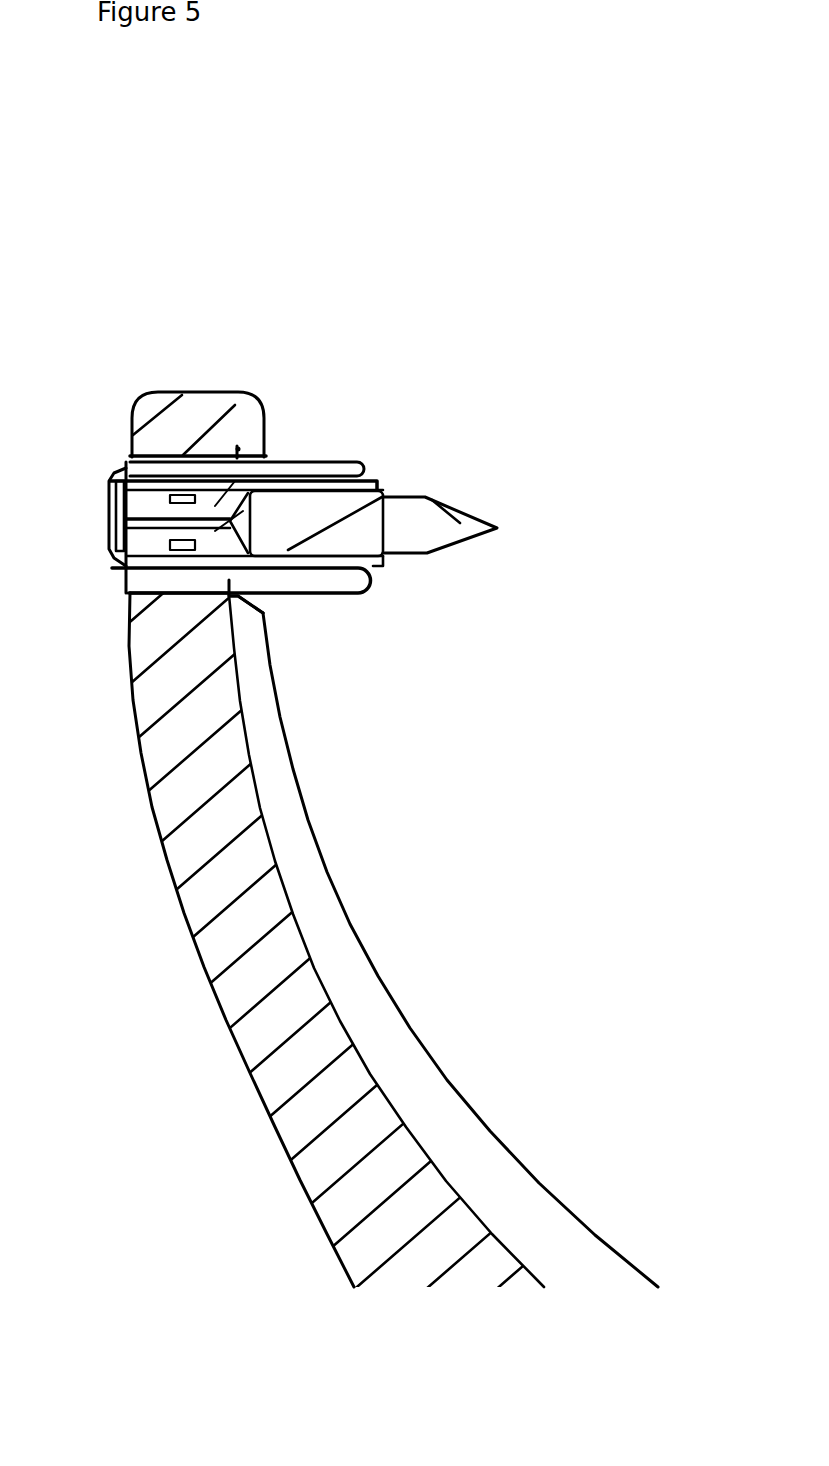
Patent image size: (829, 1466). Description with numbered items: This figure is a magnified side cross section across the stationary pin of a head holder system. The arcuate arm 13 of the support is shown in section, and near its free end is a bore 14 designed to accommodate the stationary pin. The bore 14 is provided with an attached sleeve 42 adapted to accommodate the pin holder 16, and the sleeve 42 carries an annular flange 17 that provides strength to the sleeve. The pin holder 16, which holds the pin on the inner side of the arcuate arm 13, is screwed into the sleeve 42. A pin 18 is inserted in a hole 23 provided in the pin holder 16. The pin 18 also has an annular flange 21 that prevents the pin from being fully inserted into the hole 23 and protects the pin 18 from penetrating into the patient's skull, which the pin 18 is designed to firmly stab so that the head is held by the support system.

The arcuate arm 13 is at (303, 828).
The bore 14 is at (157, 453).
The pin holder 16 is at (112, 508).
The annular flange 17 is at (258, 600).
The pin 18 is at (420, 518).
The annular flange 21 is at (382, 488).
The hole 23 is at (238, 448).
The sleeve 42 is at (308, 458).